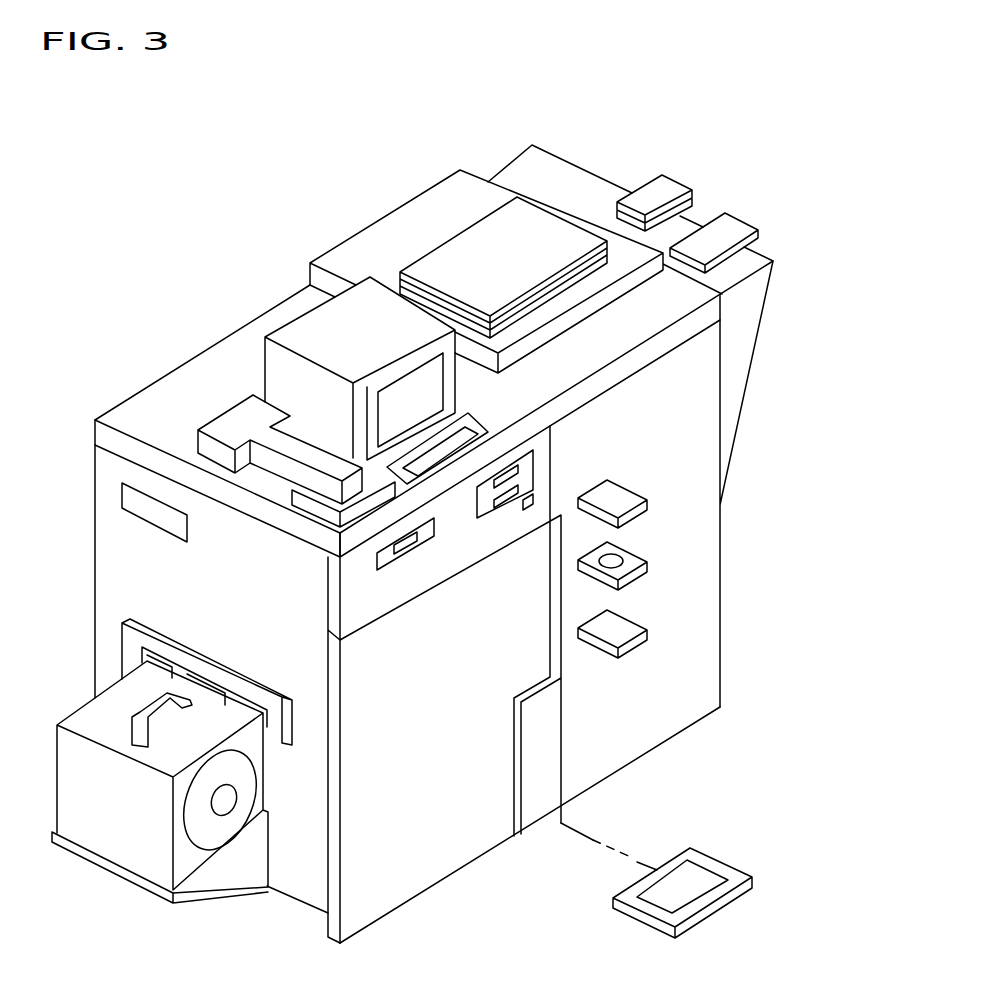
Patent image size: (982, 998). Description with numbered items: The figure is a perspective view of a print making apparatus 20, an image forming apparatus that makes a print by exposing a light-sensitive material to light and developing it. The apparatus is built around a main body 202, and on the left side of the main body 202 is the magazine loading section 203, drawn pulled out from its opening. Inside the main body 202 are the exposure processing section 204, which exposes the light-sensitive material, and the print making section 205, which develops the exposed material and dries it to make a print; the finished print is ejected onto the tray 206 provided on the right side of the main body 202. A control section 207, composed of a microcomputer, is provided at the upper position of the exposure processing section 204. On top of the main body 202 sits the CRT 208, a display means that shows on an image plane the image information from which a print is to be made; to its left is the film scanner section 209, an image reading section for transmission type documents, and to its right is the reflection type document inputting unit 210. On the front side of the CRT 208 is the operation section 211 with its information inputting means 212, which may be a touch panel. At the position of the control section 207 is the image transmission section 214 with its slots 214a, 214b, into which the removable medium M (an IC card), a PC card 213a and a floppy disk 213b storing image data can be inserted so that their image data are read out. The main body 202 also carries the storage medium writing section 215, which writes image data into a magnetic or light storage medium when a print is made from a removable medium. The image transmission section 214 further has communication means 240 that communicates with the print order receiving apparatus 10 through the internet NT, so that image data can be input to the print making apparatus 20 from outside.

The print making apparatus 20 is at (212, 247).
The main body 202 is at (292, 883).
The magazine loading section 203 is at (106, 836).
The exposure processing section 204 is at (445, 855).
The print making section 205 is at (645, 730).
The tray 206 is at (752, 303).
The control section 207 is at (397, 565).
The CRT 208 is at (320, 322).
The film scanner section 209 is at (223, 427).
The reflection type document inputting unit 210 is at (530, 218).
The operation section 211 is at (470, 425).
The information inputting means 212 is at (440, 455).
The PC card 213a is at (620, 500).
The floppy disk 213b is at (626, 560).
The image transmission section 214 is at (530, 453).
The first card slot 214a is at (506, 470).
The second card slot 214b is at (504, 502).
The storage medium writing section 215 is at (370, 563).
The communication means 240 is at (532, 500).
The removable medium M is at (622, 638).
The internet NT is at (593, 842).
The print order receiving apparatus 10 is at (723, 860).